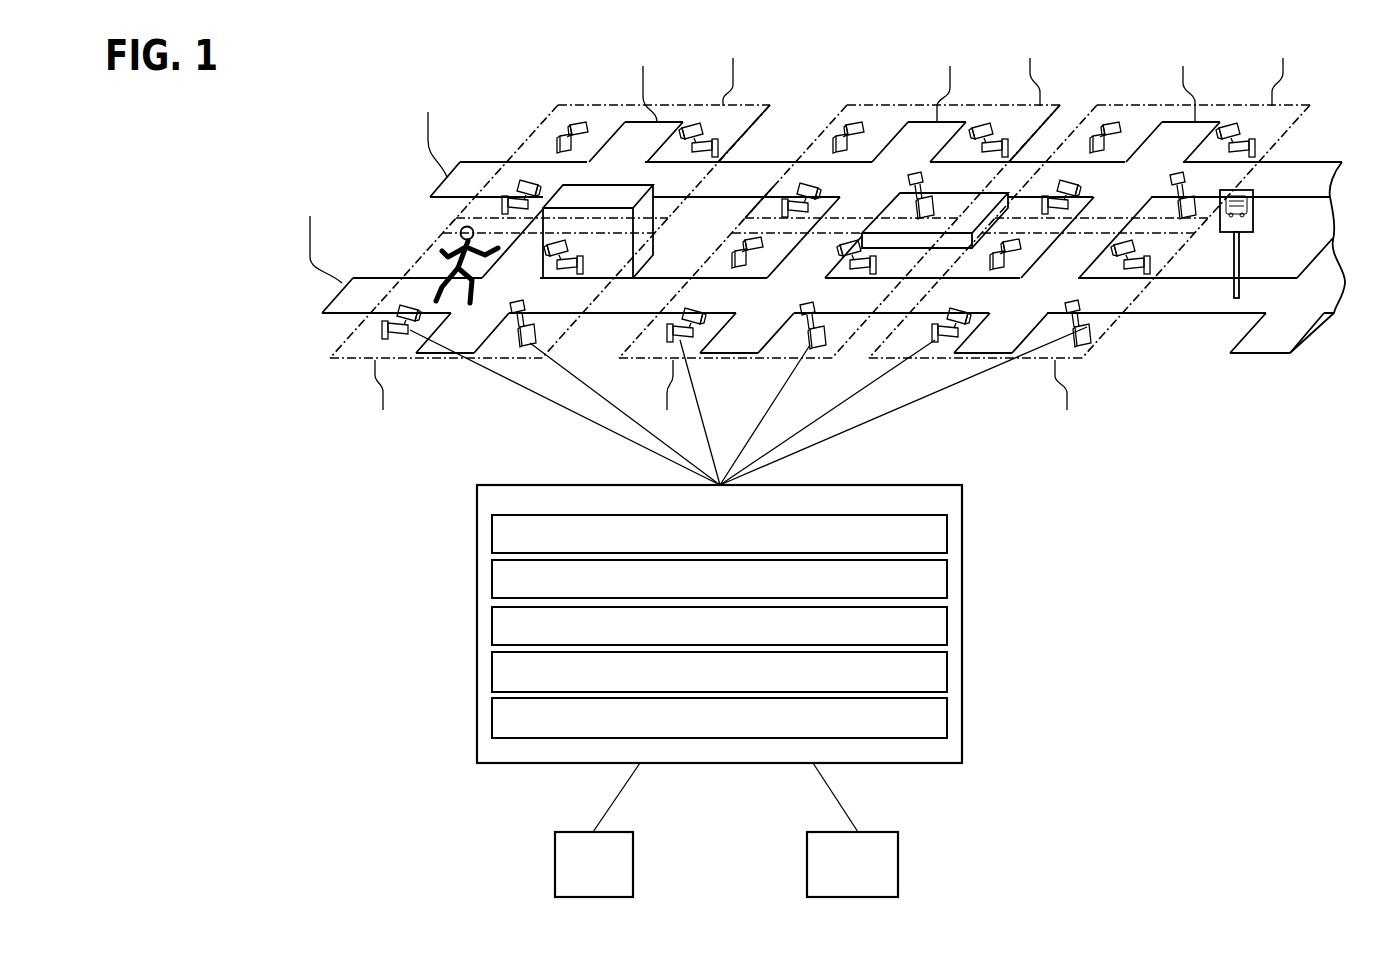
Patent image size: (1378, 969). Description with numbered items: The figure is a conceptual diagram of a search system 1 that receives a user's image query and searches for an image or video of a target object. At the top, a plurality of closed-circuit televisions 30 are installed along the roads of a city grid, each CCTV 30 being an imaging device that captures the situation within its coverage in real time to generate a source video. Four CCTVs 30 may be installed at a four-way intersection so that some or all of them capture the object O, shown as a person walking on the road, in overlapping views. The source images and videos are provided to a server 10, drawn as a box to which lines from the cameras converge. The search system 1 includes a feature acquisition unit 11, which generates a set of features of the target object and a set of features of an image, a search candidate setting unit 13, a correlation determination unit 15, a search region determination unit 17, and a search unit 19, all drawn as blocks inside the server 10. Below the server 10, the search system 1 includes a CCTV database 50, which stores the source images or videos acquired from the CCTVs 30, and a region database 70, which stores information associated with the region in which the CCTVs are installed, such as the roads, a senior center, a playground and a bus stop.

The search system 1 is at (296, 47).
The server 10 is at (477, 583).
The feature acquisition unit 11 is at (947, 533).
The search candidate setting unit 13 is at (947, 577).
The correlation determination unit 15 is at (947, 630).
The search region determination unit 17 is at (947, 672).
The search unit 19 is at (947, 722).
The closed-circuit television 30 is at (1257, 147).
The CCTV database 50 is at (555, 862).
The region database 70 is at (898, 862).
The object O is at (460, 234).